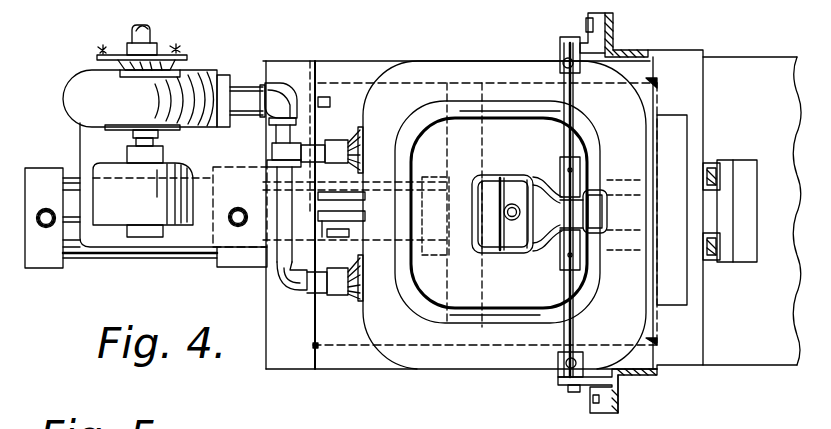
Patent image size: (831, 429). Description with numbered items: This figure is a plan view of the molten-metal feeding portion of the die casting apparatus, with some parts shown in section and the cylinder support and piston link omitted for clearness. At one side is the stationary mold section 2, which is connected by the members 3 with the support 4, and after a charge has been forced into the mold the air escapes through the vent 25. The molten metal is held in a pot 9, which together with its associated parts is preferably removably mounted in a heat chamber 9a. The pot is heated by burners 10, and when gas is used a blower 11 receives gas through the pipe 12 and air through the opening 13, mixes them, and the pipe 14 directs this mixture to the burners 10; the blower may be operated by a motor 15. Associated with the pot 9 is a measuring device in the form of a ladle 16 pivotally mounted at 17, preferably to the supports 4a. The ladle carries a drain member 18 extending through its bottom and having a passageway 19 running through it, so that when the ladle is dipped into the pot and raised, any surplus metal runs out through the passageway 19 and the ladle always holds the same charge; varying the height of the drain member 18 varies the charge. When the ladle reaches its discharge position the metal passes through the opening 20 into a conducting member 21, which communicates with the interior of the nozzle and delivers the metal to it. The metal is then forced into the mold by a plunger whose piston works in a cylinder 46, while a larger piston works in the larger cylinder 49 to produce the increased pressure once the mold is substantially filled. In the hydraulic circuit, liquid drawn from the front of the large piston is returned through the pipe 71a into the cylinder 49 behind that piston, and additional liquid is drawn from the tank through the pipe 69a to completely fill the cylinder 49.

The mold section 2 is at (742, 162).
The members 3 is at (713, 162).
The support 4 is at (692, 80).
The supports 4a is at (615, 40).
The pot 9 is at (503, 303).
The heat chamber 9a is at (423, 333).
The burners 10 is at (338, 142).
The blower 11 is at (77, 92).
The pipe 12 is at (150, 30).
The opening 13 is at (110, 52).
The pipe 14 is at (282, 90).
The motor 15 is at (105, 165).
The ladle 16 is at (520, 255).
The pivot 17 is at (566, 325).
The drain member 18 is at (515, 205).
The passageway 19 is at (510, 210).
The opening 20 is at (597, 200).
The conducting member 21 is at (587, 215).
The vent 25 is at (770, 198).
The cylinder 46 is at (343, 237).
The cylinder 49 is at (78, 250).
The pipe 69a is at (239, 226).
The pipe 71a is at (46, 228).